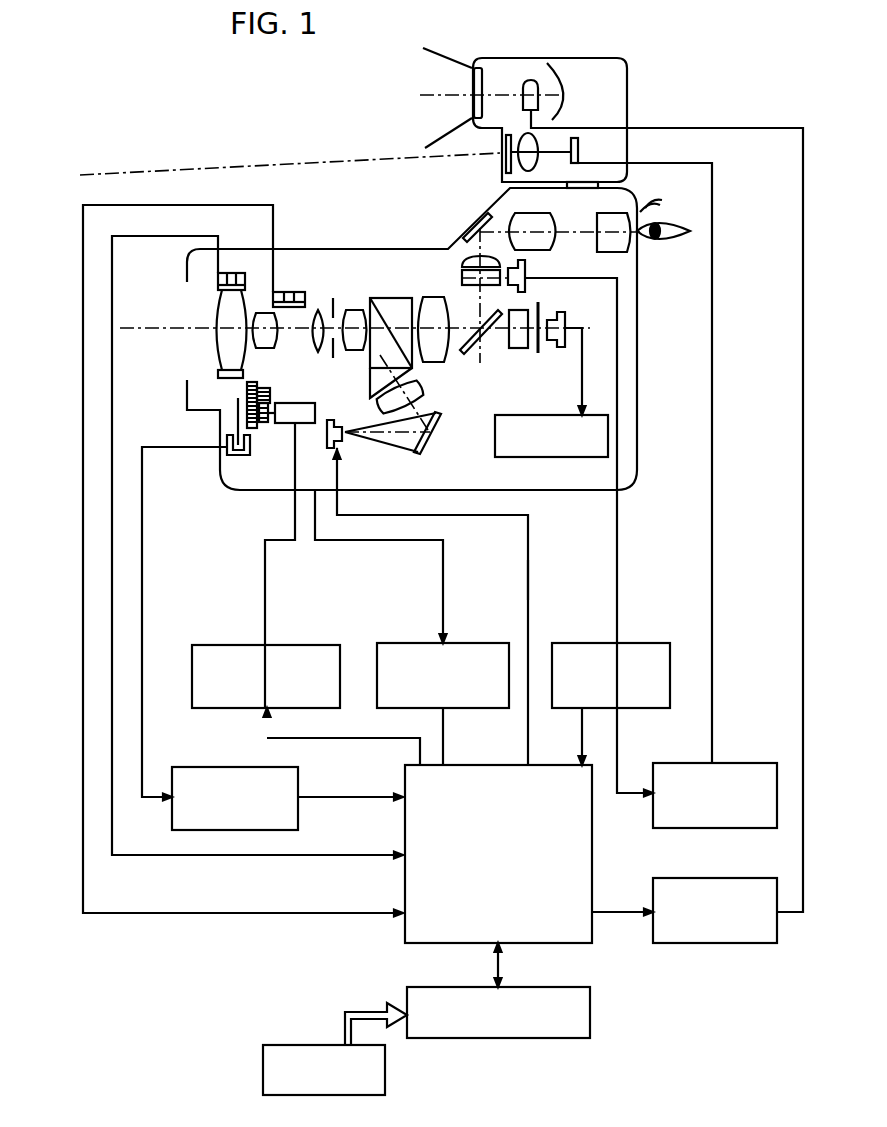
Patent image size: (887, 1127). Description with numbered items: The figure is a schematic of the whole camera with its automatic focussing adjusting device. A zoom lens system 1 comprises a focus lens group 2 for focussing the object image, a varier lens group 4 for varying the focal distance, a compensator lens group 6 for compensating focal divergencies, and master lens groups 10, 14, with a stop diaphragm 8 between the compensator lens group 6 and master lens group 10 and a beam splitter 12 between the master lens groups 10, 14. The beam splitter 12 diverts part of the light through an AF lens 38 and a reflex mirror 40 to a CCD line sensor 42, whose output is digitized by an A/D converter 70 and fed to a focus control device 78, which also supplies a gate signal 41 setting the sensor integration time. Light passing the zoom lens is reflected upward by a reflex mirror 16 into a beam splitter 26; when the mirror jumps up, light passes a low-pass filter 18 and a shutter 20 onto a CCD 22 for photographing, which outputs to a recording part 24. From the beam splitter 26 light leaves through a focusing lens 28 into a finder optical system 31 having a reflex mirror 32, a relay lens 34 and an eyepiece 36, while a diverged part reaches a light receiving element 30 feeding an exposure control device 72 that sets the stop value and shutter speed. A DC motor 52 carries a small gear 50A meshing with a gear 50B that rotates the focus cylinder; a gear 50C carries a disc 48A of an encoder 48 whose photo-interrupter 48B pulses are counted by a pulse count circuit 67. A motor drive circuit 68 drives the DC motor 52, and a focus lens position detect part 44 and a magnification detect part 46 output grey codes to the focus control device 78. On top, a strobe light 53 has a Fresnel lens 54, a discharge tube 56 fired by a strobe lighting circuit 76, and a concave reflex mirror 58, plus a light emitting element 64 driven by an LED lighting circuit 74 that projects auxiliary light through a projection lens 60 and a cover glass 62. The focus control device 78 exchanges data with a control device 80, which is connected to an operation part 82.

The zoom lens system 1 is at (313, 297).
The focus lens group 2 is at (215, 320).
The varier lens group 4 is at (262, 350).
The compensator lens group 6 is at (314, 347).
The stop diaphragm 8 is at (333, 358).
The master lens group 10 is at (350, 350).
The beam splitter 12 is at (392, 298).
The master lens group 14 is at (430, 297).
The reflex mirror 16 is at (470, 343).
The low-pass filter 18 is at (518, 348).
The shutter 20 is at (540, 318).
The CCD for photographing 22 is at (565, 323).
The recording part 24 is at (556, 415).
The beam splitter 26 is at (465, 262).
The focusing lens 28 is at (470, 268).
The light receiving element 30 is at (525, 272).
The finder optical system 31 is at (635, 220).
The reflex mirror 32 is at (478, 224).
The relay lens 34 is at (556, 218).
The eyepiece 36 is at (633, 245).
The AF lens 38 is at (430, 396).
The reflex mirror 40 is at (432, 447).
The gate signal 41 is at (530, 572).
The CCD line sensor 42 is at (345, 438).
The focus lens position detect part 44 is at (236, 273).
The magnification detect part 46 is at (287, 292).
The encoder 48 is at (230, 425).
The disc 48A is at (237, 410).
The photo-interrupter 48B is at (227, 450).
The small gear 50A is at (262, 425).
The gear 50B is at (248, 386).
The gear 50C is at (250, 450).
The DC motor 52 is at (286, 425).
The strobe light 53 is at (627, 53).
The Fresnel lens 54 is at (479, 68).
The discharge tube 56 is at (531, 80).
The concave reflex mirror 58 is at (563, 80).
The projection lens 60 is at (537, 143).
The cover glass 62 is at (505, 164).
The light emitting element 64 is at (578, 145).
The pulse count circuit 67 is at (220, 767).
The motor drive circuit 68 is at (313, 645).
The A/D converter 70 is at (486, 643).
The exposure control device 72 is at (658, 643).
The LED lighting circuit 74 is at (750, 763).
The strobe lighting circuit 76 is at (653, 878).
The focus control device 78 is at (488, 765).
The control device 80 is at (592, 1010).
The operation part 82 is at (303, 1045).